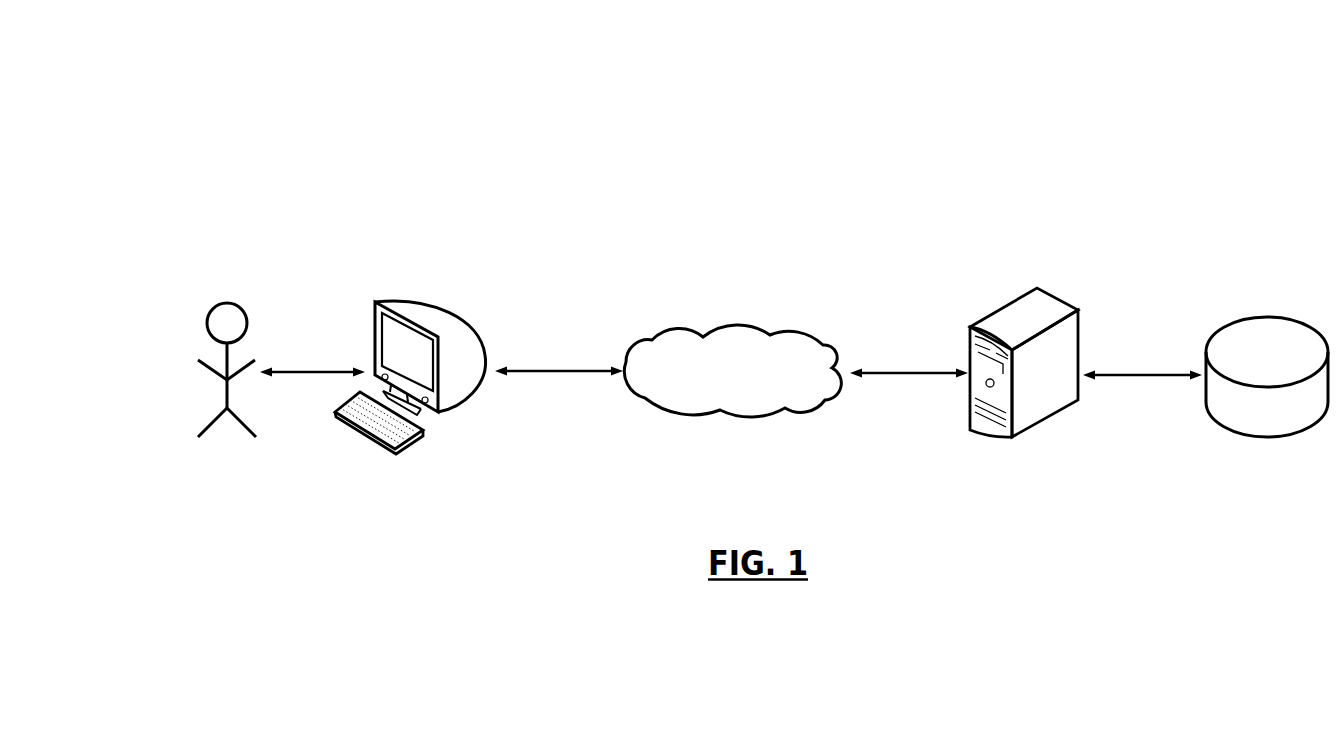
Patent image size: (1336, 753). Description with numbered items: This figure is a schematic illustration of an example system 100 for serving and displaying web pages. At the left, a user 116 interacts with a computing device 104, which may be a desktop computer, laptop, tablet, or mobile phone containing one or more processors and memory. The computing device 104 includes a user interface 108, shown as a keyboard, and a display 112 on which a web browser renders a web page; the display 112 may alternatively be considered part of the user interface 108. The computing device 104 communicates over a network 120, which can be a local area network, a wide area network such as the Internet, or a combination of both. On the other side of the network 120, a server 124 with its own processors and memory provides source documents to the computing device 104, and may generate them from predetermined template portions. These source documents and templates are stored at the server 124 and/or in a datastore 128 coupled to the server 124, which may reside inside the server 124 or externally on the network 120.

The system 100 is at (250, 72).
The computing device 104 is at (463, 323).
The user interface 108 is at (365, 435).
The display 112 is at (427, 372).
The user 116 is at (184, 282).
The network 120 is at (737, 325).
The server 124 is at (1053, 296).
The datastore 128 is at (1270, 317).